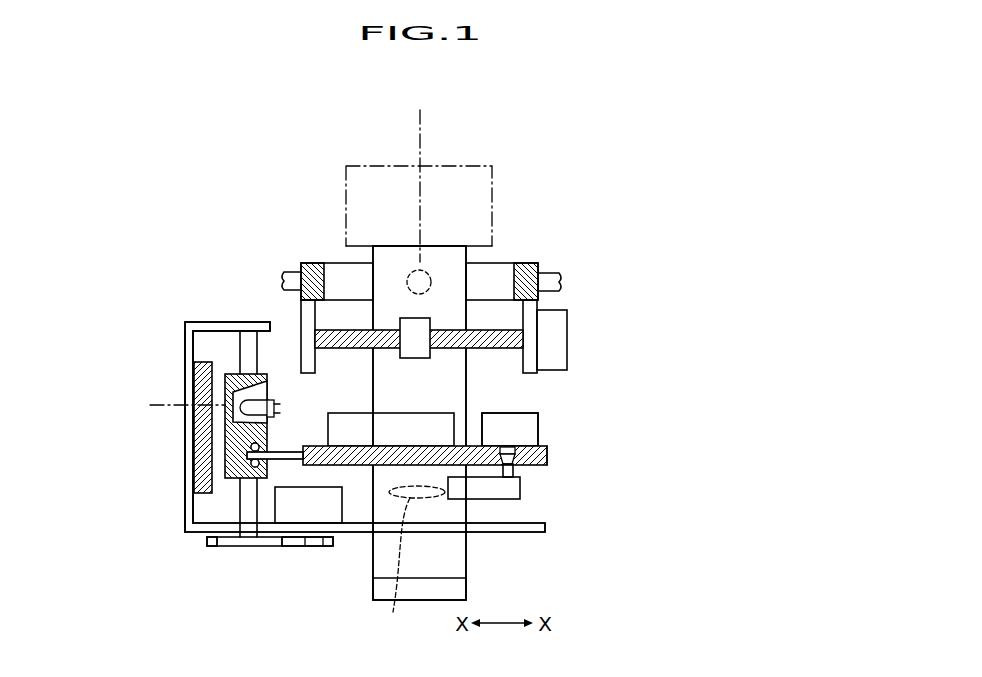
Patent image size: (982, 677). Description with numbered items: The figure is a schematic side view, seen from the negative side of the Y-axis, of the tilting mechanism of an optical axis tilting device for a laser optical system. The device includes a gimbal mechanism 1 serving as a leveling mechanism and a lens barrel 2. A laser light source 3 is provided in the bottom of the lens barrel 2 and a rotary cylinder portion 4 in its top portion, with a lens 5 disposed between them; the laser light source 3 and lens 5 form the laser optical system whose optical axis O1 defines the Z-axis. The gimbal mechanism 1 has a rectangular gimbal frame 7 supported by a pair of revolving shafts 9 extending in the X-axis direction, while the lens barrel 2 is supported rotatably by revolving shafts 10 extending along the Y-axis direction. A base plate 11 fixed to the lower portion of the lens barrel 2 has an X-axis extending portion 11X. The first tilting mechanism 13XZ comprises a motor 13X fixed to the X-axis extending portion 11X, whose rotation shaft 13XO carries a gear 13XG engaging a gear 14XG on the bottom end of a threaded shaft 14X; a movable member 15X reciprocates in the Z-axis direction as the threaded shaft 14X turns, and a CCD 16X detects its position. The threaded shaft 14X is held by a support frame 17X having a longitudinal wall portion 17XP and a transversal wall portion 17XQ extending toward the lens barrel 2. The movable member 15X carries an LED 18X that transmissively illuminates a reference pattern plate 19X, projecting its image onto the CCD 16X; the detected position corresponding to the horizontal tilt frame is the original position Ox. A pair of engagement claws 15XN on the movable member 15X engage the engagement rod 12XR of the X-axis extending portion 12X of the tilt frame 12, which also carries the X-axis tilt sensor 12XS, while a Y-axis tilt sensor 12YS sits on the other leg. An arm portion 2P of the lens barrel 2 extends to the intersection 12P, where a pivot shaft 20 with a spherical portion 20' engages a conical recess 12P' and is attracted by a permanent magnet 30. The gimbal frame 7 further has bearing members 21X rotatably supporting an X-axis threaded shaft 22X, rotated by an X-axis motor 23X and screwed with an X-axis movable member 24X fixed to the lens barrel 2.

The gimbal mechanism 1 is at (572, 289).
The lens barrel 2 is at (468, 377).
The laser light source 3 is at (425, 590).
The rotary cylinder portion 4 is at (490, 165).
The lens 5 is at (413, 560).
The gimbal frame 7 is at (539, 266).
The revolving shaft 9 is at (287, 281).
The revolving shaft 10 is at (431, 272).
The base plate 11 is at (497, 536).
The X-axis extending portion 11X is at (528, 526).
The tilt frame 12 is at (356, 465).
The X-axis extending portion 12X is at (373, 582).
The X-axis tilt sensor 12XS is at (407, 430).
The engagement rod 12XR is at (284, 460).
The intersection 12P is at (588, 440).
The conical recess 12P' is at (504, 414).
The Y-axis tilt sensor 12YS is at (534, 418).
The motor 13X is at (274, 506).
The rotation shaft 13XO is at (302, 547).
The gear 13XG is at (318, 547).
The first tilting mechanism 13XZ is at (181, 428).
The threaded shaft 14X is at (240, 350).
The gear 14XG is at (213, 547).
The movable member 15X is at (262, 448).
The engagement claw 15XN is at (250, 450).
The CCD 16X is at (232, 394).
The support frame 17X is at (181, 332).
The transversal wall portion 17XQ is at (228, 322).
The longitudinal wall portion 17XP is at (190, 447).
The LED 18X is at (200, 379).
The reference pattern plate 19X is at (222, 466).
The pivot shaft 20 is at (568, 483).
The spherical portion 20' is at (587, 457).
The bearing member 21X is at (303, 340).
The X-axis threaded shaft 22X is at (506, 301).
The X-axis motor 23X is at (558, 320).
The X-axis movable member 24X is at (405, 326).
The permanent magnet 30 is at (515, 449).
The arm portion 2P is at (507, 487).
The optical axis O1 is at (418, 128).
The original position Ox is at (168, 405).